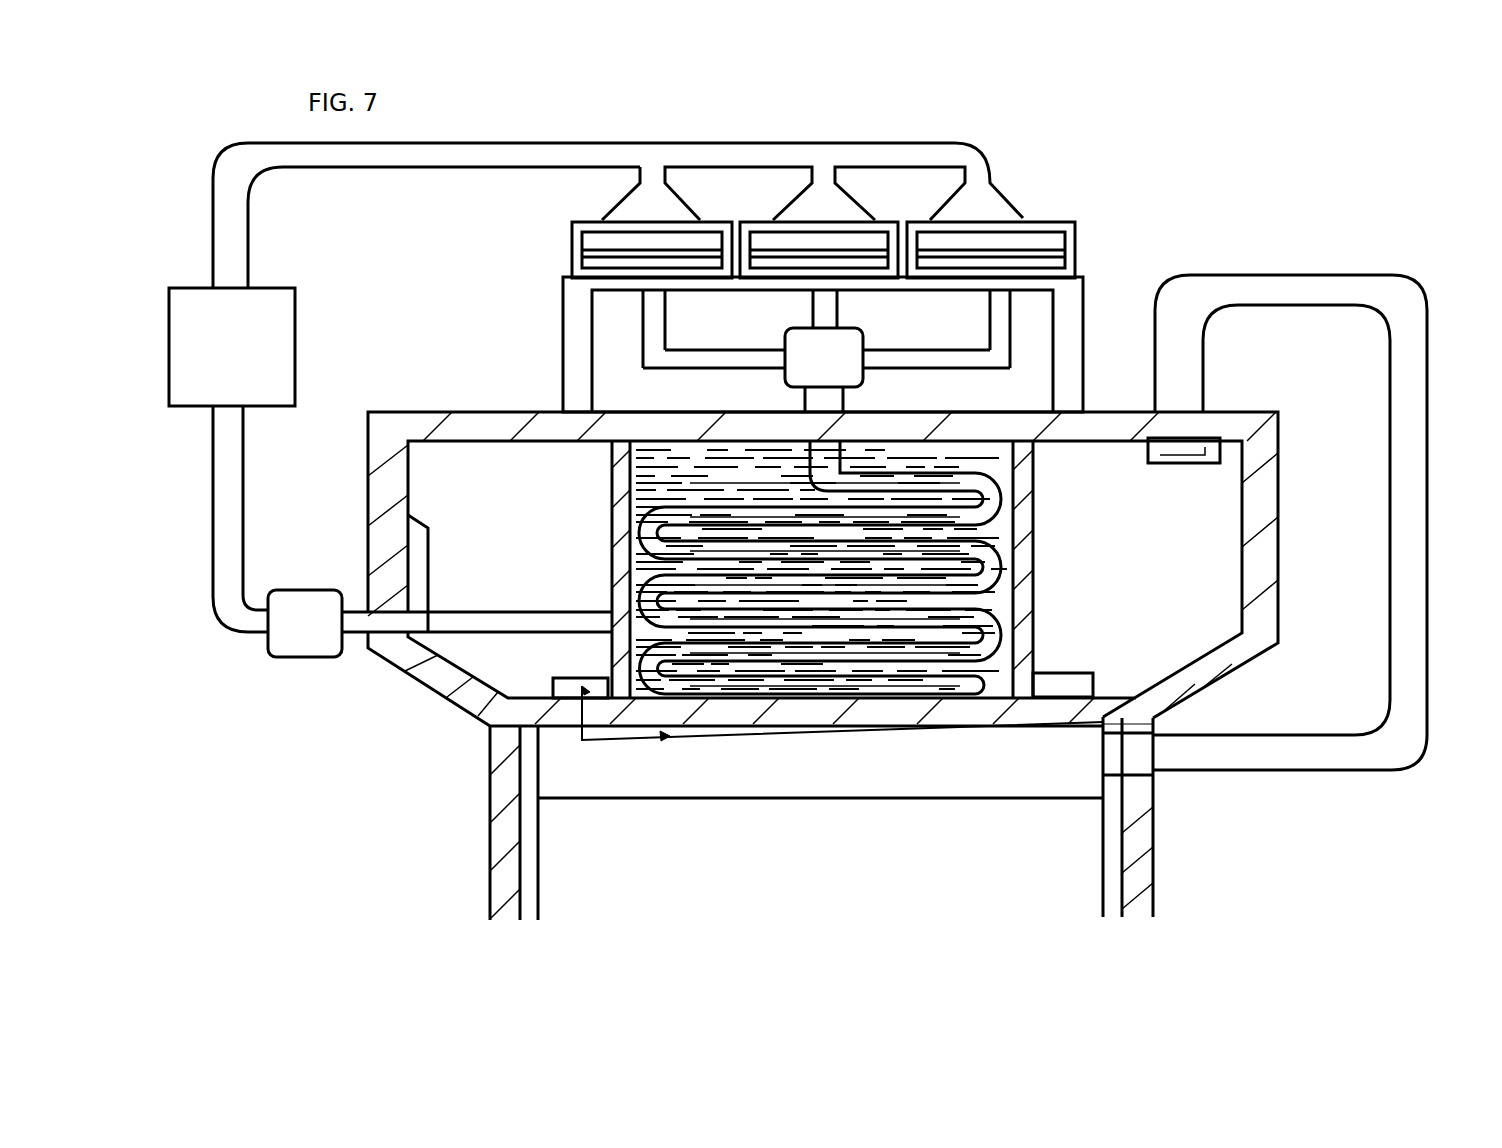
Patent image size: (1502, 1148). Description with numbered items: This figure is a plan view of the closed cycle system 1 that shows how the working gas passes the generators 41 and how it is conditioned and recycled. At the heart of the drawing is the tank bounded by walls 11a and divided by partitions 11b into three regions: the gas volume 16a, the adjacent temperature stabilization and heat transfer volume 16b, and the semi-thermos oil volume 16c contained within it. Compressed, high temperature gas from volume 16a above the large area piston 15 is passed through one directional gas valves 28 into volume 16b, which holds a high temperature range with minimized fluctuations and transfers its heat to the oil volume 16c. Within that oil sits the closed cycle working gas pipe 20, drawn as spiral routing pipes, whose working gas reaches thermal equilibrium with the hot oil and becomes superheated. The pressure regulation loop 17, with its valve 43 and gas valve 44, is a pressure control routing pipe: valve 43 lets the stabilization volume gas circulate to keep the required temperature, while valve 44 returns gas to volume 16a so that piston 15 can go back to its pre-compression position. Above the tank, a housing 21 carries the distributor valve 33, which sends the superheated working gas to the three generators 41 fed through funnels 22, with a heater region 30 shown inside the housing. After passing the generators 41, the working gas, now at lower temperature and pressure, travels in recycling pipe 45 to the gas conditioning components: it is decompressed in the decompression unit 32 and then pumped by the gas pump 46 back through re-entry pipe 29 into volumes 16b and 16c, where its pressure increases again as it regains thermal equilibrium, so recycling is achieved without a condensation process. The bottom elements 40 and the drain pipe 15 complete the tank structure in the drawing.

The substrate processing apparatus 1 is at (540, 775).
The tank wall 11a is at (385, 480).
The partition wall 11b is at (620, 657).
The large area piston 15 is at (1047, 808).
The gas volume 16a is at (540, 775).
The temperature stabilization and heat transfer volume 16b is at (450, 583).
The semi-thermos oil volume 16c is at (750, 483).
The temperature stabilization volume pressure regulation loop 17 is at (1275, 290).
The working gas pipe 20 is at (945, 523).
The housing 21 is at (1067, 320).
The funnels 22 is at (1048, 225).
The one directional gas valves 28 is at (1067, 683).
The re-entry pipe 29 is at (1077, 627).
The heater 30 is at (657, 317).
The decompression unit 32 is at (243, 327).
The distributor valve 33 is at (813, 360).
The bottom heater 40 is at (565, 715).
The generators 41 is at (583, 263).
The valve 43 is at (1213, 438).
The gas valve 44 is at (1133, 751).
The recycling pipe 45 is at (460, 150).
The gas pump 46 is at (293, 610).